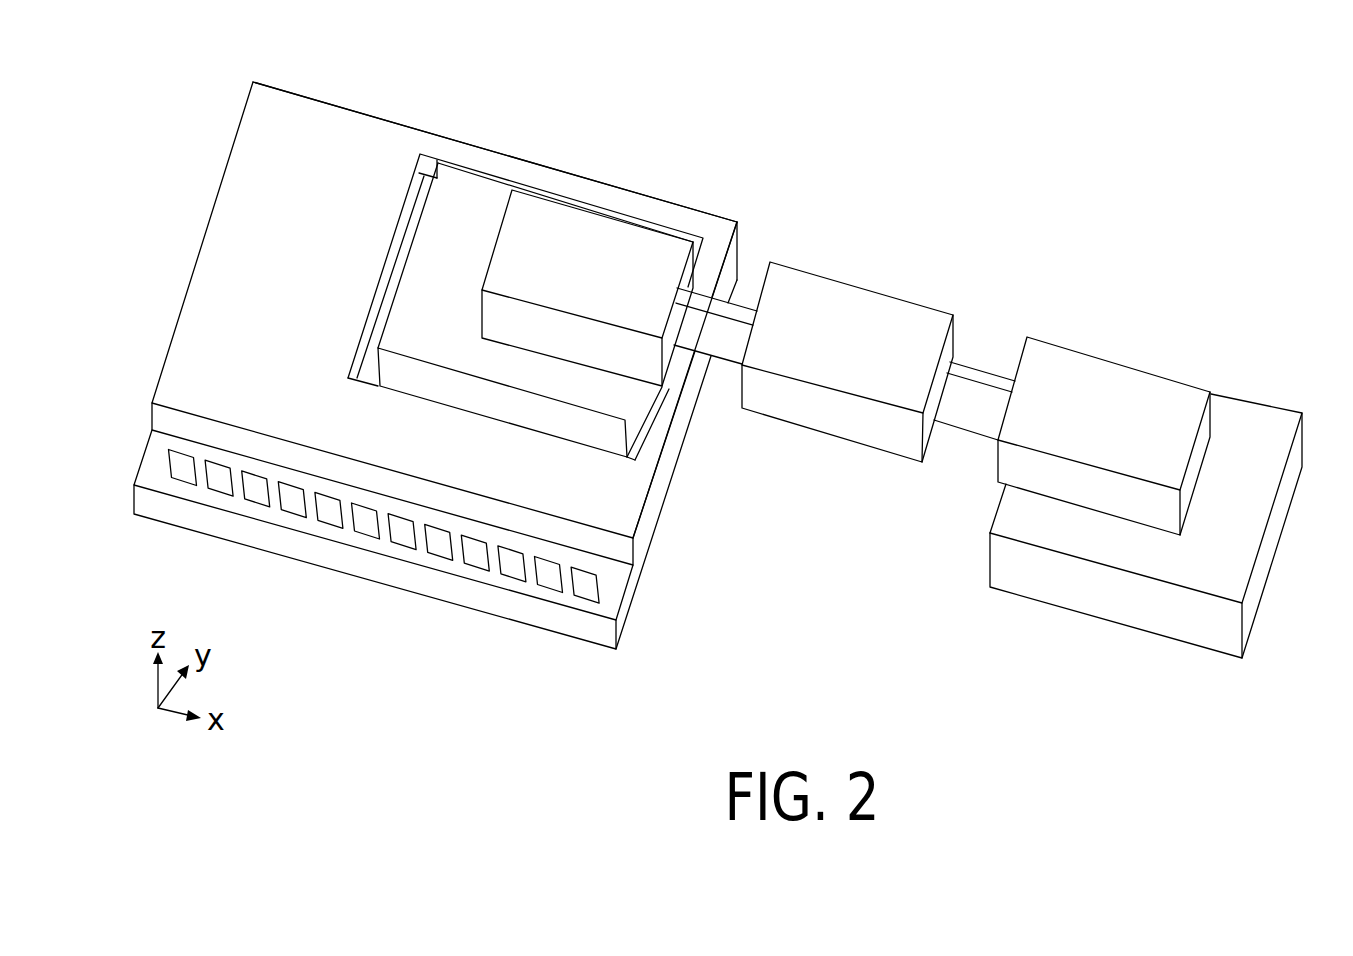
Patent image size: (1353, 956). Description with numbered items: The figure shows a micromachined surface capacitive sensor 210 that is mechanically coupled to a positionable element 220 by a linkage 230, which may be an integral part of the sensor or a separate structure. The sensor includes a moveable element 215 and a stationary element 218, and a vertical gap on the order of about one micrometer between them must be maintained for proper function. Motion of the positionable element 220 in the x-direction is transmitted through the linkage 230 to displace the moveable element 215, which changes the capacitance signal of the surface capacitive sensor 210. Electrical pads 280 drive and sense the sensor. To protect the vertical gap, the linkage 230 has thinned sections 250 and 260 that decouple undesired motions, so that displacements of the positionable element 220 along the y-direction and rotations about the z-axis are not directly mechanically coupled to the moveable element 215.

The micromachined surface capacitive sensor 210 is at (175, 241).
The stationary element 218 is at (337, 137).
The moveable element 215 is at (470, 190).
The thinned section 260 is at (731, 343).
The linkage 230 is at (868, 270).
The thinned section 250 is at (963, 402).
The positionable element 220 is at (1249, 427).
The electrical pads 280 is at (330, 512).